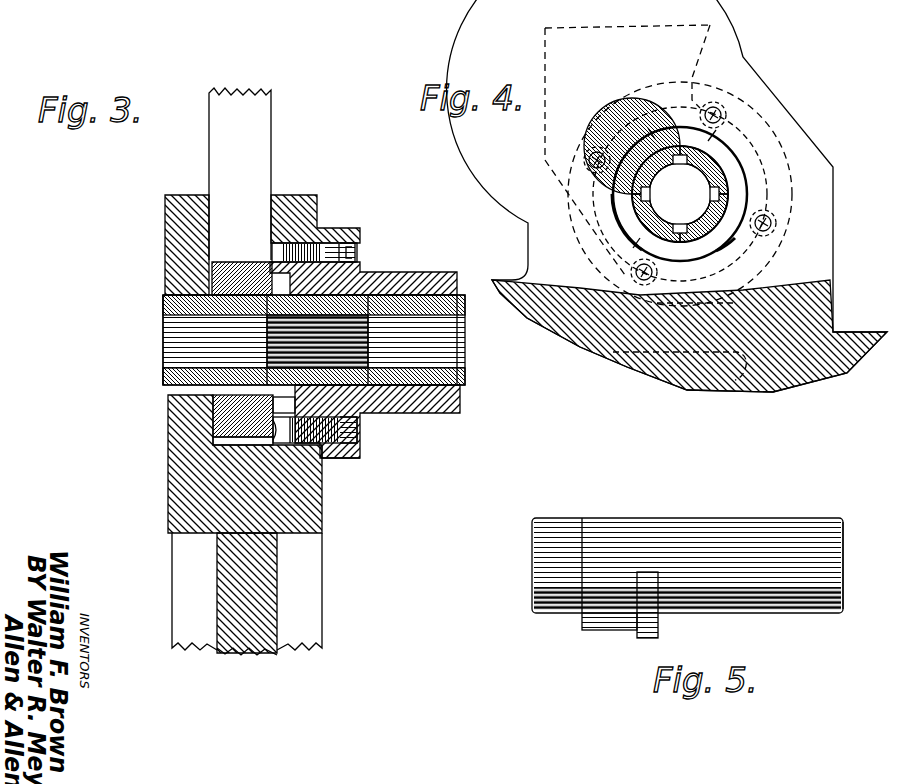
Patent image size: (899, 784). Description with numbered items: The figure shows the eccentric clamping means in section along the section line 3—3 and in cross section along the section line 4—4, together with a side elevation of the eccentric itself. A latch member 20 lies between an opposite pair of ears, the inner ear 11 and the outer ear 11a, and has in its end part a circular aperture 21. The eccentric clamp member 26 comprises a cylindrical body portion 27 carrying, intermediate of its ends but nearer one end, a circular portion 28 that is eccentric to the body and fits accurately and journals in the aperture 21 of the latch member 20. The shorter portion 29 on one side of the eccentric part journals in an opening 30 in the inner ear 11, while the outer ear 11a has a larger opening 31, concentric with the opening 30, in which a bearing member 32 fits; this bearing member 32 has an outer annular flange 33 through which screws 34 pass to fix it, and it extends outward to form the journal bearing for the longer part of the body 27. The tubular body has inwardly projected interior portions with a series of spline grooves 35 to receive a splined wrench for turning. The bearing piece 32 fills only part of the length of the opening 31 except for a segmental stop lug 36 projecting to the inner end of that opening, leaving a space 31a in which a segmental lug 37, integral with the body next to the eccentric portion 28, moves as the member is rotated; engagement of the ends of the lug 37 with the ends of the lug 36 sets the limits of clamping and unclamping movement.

In FIG. 4, the section line 3— 3 is at (588, 395).
In FIG. 3, the section line 4— 4 is at (267, 92).
In FIG. 5, the section line 4— 4 is at (637, 713).
In FIG. 3, the inner ear 11 is at (172, 195).
In FIG. 4, the inner ear 11 is at (527, 161).
In FIG. 3, the outer ear 11a is at (290, 202).
In FIG. 3, the latch member 20 is at (252, 142).
In FIG. 4, the latch member 20 is at (560, 46).
In FIG. 3, the circular aperture 21 is at (212, 422).
In FIG. 4, the circular aperture 21 is at (792, 215).
In FIG. 3, the eccentric clamp member 26 is at (466, 378).
In FIG. 4, the eccentric clamp member 26 is at (661, 148).
In FIG. 5, the eccentric clamp member 26 is at (692, 532).
In FIG. 3, the cylindrical body portion 27 is at (420, 273).
In FIG. 4, the cylindrical body portion 27 is at (722, 165).
In FIG. 5, the cylindrical body portion 27 is at (812, 520).
In FIG. 3, the circular eccentric portion 28 is at (213, 392).
In FIG. 4, the circular eccentric portion 28 is at (812, 147).
In FIG. 5, the circular eccentric portion 28 is at (600, 620).
In FIG. 3, the shorter portion 29 is at (167, 290).
In FIG. 5, the shorter portion 29 is at (535, 585).
In FIG. 3, the opening 30 is at (168, 278).
In FIG. 3, the larger opening 31 is at (320, 240).
In FIG. 4, the space 31a is at (712, 152).
In FIG. 3, the bearing member 32 is at (390, 403).
In FIG. 4, the bearing member 32 is at (742, 182).
In FIG. 3, the outer annular flange 33 is at (360, 458).
In FIG. 3, the screws 34 is at (356, 250).
In FIG. 3, the spline grooves 35 is at (465, 352).
In FIG. 4, the spline grooves 35 is at (627, 214).
In FIG. 4, the segmental stop lug 36 is at (632, 243).
In FIG. 3, the segmental lug 37 is at (325, 463).
In FIG. 4, the segmental lug 37 is at (725, 254).
In FIG. 5, the segmental lug 37 is at (660, 627).